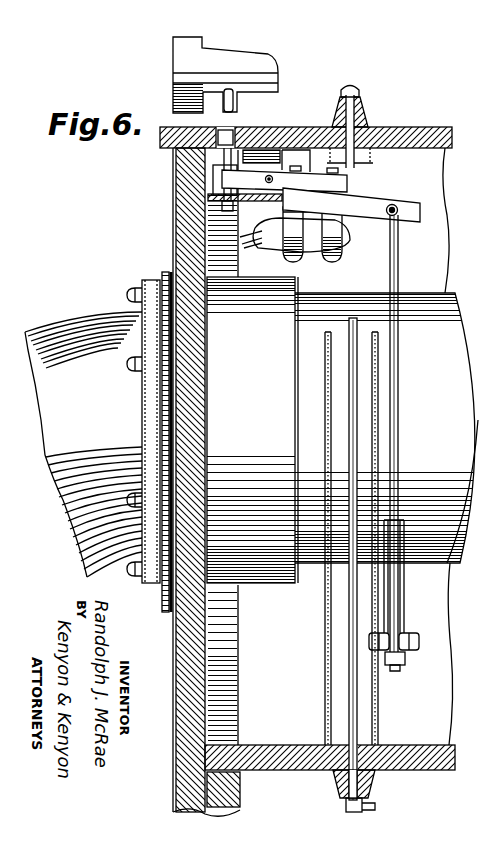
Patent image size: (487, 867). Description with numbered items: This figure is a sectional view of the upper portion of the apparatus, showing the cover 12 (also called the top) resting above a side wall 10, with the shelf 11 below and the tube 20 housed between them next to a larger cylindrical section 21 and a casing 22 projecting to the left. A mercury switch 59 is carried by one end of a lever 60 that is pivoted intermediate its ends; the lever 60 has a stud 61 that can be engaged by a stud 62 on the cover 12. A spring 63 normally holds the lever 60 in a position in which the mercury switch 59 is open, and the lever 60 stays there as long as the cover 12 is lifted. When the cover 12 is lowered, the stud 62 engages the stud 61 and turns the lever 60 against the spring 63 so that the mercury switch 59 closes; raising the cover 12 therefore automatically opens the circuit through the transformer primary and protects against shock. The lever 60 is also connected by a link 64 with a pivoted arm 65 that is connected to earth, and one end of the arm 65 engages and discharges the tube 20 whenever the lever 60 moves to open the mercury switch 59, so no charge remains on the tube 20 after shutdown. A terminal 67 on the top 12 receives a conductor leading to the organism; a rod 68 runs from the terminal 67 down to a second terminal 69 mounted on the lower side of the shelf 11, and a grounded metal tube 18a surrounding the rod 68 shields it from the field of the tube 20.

The side wall 10 is at (180, 232).
The shelf 11 is at (292, 748).
The cover 12 is at (426, 129).
The metal tube 18a is at (377, 157).
The tube 20 is at (387, 428).
The cylinder section 21 is at (252, 430).
The casing tube 22 is at (93, 322).
The mercury switch 59 is at (344, 250).
The lever 60 is at (311, 170).
The stud 61 is at (262, 133).
The stud 62 is at (234, 102).
The spring 63 is at (213, 184).
The link 64 is at (399, 261).
The pivoted arm 65 is at (405, 605).
The terminal 67 is at (350, 85).
The rod 68 is at (355, 648).
The second terminal 69 is at (366, 806).